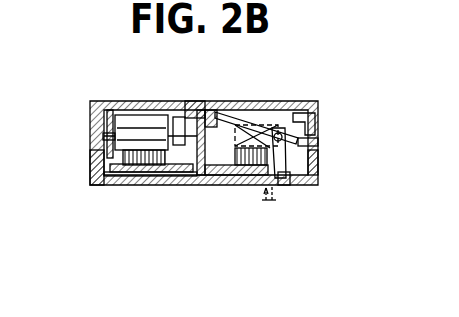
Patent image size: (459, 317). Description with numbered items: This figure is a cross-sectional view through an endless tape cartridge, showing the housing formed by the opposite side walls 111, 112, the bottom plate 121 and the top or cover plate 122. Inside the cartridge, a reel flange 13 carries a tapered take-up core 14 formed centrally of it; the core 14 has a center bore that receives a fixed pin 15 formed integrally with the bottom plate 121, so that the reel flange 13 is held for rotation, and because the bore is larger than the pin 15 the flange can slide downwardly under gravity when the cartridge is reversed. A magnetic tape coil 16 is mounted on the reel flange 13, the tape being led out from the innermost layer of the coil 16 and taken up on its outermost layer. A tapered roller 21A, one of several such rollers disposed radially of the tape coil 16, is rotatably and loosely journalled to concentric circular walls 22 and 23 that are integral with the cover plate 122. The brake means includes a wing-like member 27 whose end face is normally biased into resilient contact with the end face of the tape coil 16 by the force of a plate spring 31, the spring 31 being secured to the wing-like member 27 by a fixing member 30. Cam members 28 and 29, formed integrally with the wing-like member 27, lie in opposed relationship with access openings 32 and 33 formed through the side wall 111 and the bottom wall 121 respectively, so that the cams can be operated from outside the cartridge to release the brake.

The side wall 111 is at (318, 170).
The side wall 112 is at (96, 168).
The bottom plate 121 is at (140, 178).
The cover plate 122 is at (260, 103).
The reel flange 13 is at (226, 176).
The take-up core 14 is at (208, 178).
The fixed pin 15 is at (150, 168).
The magnetic tape coil 16 is at (112, 184).
The tapered roller 21A is at (143, 128).
The circular wall 22 is at (96, 156).
The circular wall 23 is at (184, 104).
The wing-like member 27 is at (225, 104).
The cam member 28 is at (318, 142).
The cam member 29 is at (290, 180).
The fixing member 30 is at (300, 105).
The plate spring 31 is at (285, 103).
The access opening 32 is at (339, 158).
The access opening 33 is at (262, 192).